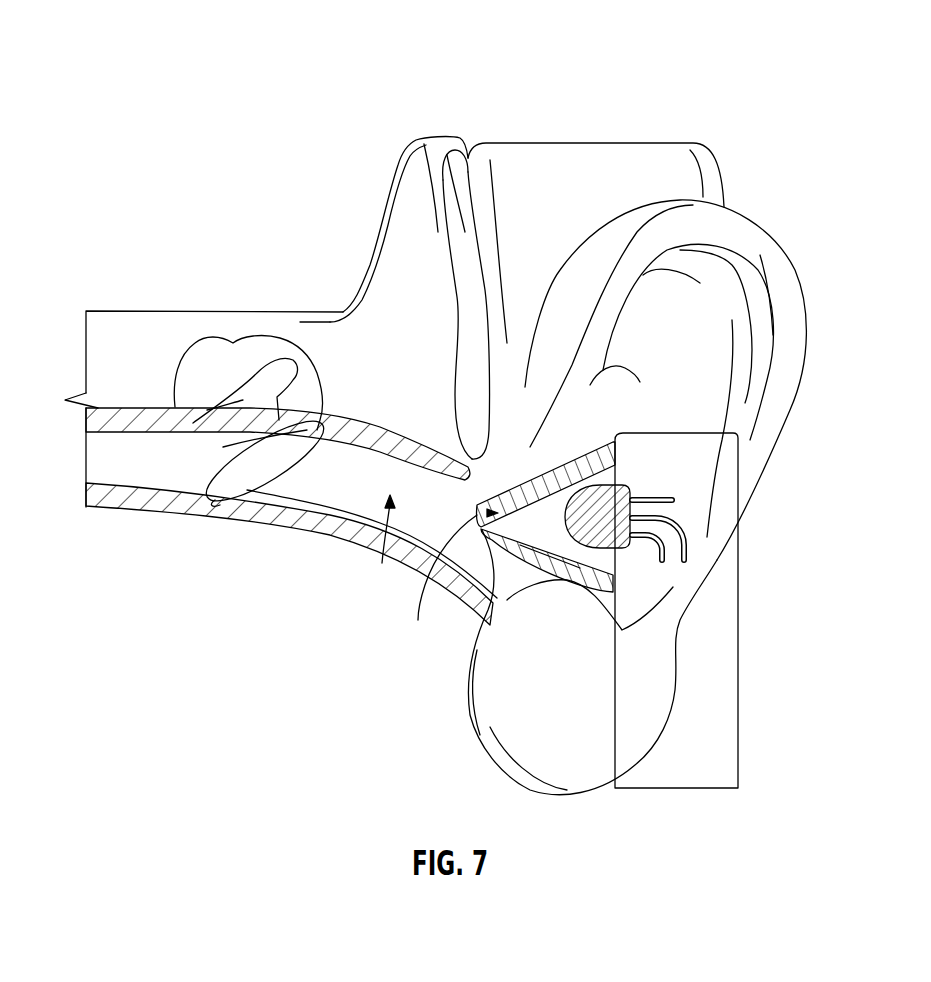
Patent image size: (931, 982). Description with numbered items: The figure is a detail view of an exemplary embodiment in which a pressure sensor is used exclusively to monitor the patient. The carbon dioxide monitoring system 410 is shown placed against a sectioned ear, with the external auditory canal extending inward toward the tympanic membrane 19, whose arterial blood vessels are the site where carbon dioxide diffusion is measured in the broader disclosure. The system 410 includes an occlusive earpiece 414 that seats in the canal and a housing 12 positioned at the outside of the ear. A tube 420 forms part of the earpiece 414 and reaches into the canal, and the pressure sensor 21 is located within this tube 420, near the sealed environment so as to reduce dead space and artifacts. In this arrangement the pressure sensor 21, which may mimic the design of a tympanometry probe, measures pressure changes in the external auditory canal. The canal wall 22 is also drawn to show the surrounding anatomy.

The carbon dioxide monitoring system 410 is at (710, 49).
The housing 12 is at (703, 473).
The tympanic membrane 19 is at (250, 484).
The pressure sensor 21 is at (567, 575).
The ear canal wall 22 is at (363, 548).
The tube 420 is at (432, 548).
The occlusive earpiece 414 is at (465, 605).